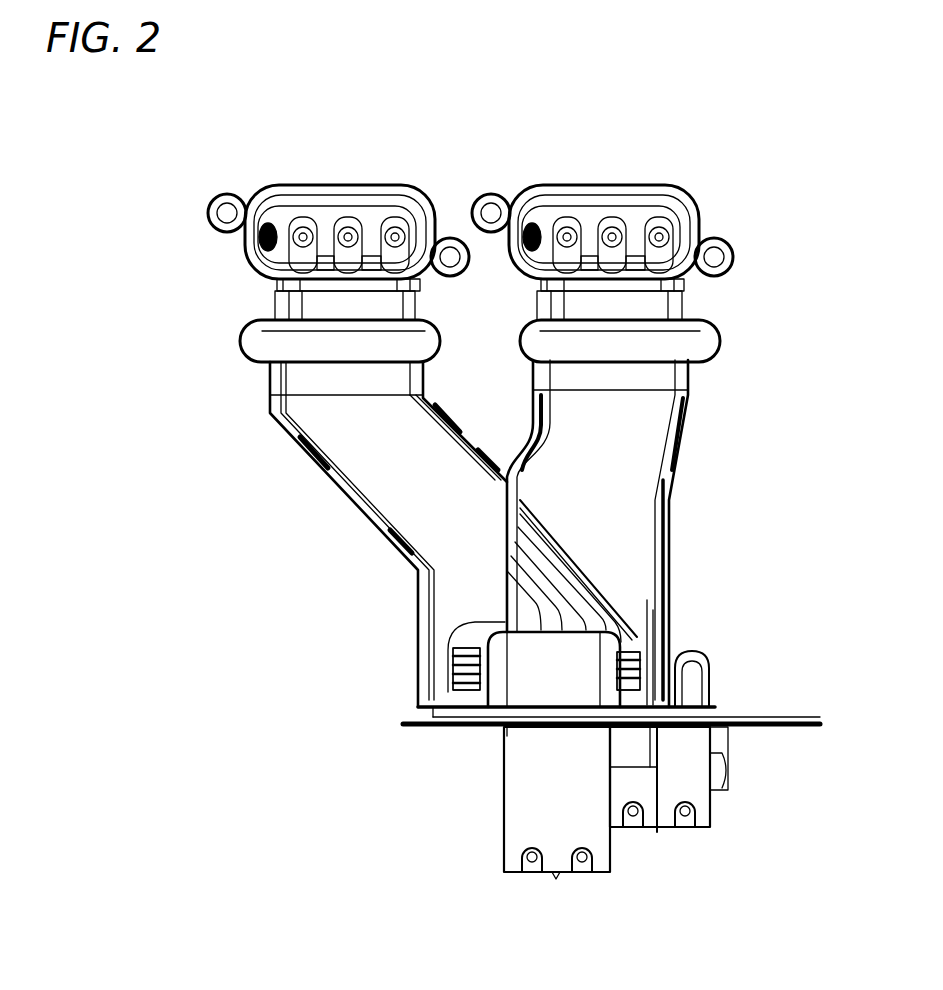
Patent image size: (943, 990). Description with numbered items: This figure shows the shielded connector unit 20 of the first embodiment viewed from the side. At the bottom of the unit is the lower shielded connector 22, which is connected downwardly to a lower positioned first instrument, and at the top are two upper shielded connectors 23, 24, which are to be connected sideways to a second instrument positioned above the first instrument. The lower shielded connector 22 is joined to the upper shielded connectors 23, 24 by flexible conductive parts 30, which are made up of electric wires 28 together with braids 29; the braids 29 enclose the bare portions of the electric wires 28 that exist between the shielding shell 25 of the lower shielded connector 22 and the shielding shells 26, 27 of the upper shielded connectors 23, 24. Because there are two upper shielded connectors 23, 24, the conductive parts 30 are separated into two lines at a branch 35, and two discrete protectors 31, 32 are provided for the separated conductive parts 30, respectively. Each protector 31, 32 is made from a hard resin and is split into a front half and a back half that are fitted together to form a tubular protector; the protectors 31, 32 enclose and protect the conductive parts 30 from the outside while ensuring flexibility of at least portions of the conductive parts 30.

The shielded connector unit 20 is at (737, 339).
The lower shielded connector 22 is at (462, 757).
The upper shielded connector 23 is at (345, 174).
The upper shielded connector 24 is at (612, 167).
The shielding shell 25 is at (455, 723).
The shielding shell 26 is at (312, 187).
The shielding shell 27 is at (575, 187).
The electric wires 28 is at (530, 589).
The braids 29 is at (466, 669).
The flexible conductive parts 30 is at (628, 671).
The protector 31 is at (402, 487).
The protector 32 is at (613, 468).
The branch 35 is at (504, 456).